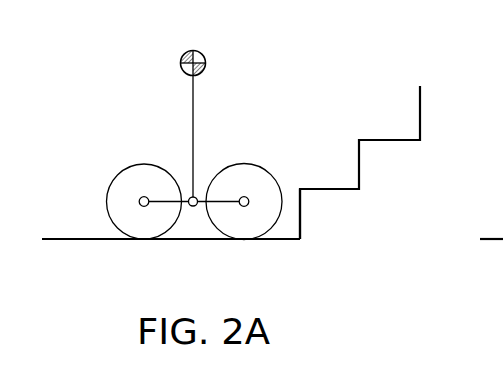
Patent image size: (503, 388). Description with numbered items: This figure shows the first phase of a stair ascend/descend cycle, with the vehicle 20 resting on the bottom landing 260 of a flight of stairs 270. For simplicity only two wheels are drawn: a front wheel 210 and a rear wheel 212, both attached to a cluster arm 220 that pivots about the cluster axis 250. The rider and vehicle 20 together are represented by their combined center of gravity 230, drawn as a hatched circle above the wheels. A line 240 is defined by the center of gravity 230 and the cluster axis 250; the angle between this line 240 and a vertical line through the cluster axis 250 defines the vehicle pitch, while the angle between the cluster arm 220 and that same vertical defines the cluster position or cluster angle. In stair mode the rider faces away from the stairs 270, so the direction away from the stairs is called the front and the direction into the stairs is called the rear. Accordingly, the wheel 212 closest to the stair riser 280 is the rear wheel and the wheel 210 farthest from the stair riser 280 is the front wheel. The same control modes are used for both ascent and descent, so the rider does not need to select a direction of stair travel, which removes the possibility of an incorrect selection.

The vehicle 20 is at (92, 88).
The front wheel 210 is at (116, 177).
The rear wheel 212 is at (277, 183).
The cluster arm 220 is at (198, 206).
The center of gravity 230 is at (184, 54).
The line 240 is at (194, 113).
The cluster axis 250 is at (189, 206).
The bottom landing 260 is at (70, 240).
The stairs 270 is at (373, 59).
The stair riser 280 is at (301, 218).